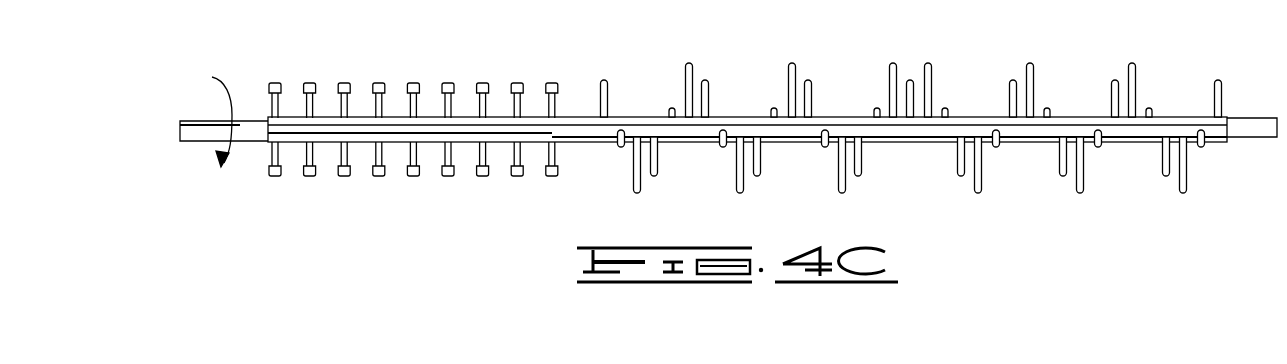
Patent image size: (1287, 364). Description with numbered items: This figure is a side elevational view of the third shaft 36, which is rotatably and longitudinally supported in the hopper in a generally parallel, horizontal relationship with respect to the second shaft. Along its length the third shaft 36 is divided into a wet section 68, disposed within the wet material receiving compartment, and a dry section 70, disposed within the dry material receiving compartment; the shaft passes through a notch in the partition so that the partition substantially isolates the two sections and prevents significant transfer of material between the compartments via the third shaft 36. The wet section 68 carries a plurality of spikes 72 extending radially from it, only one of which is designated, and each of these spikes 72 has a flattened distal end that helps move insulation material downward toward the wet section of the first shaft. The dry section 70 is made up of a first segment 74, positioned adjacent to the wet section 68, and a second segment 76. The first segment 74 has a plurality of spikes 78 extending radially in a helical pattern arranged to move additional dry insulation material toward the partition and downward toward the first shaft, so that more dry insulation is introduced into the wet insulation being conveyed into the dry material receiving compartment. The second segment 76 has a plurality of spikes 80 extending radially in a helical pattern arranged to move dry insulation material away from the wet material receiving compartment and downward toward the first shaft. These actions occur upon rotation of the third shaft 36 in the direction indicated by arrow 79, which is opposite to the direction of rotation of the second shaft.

The third shaft 36 is at (254, 141).
The wet section 68 is at (414, 109).
The dry section 70 is at (940, 120).
The spikes 72 is at (375, 158).
The first segment 74 is at (755, 149).
The second segment 76 is at (1098, 149).
The spikes 78 is at (710, 165).
The arrow 79 is at (230, 90).
The spikes 80 is at (1249, 95).